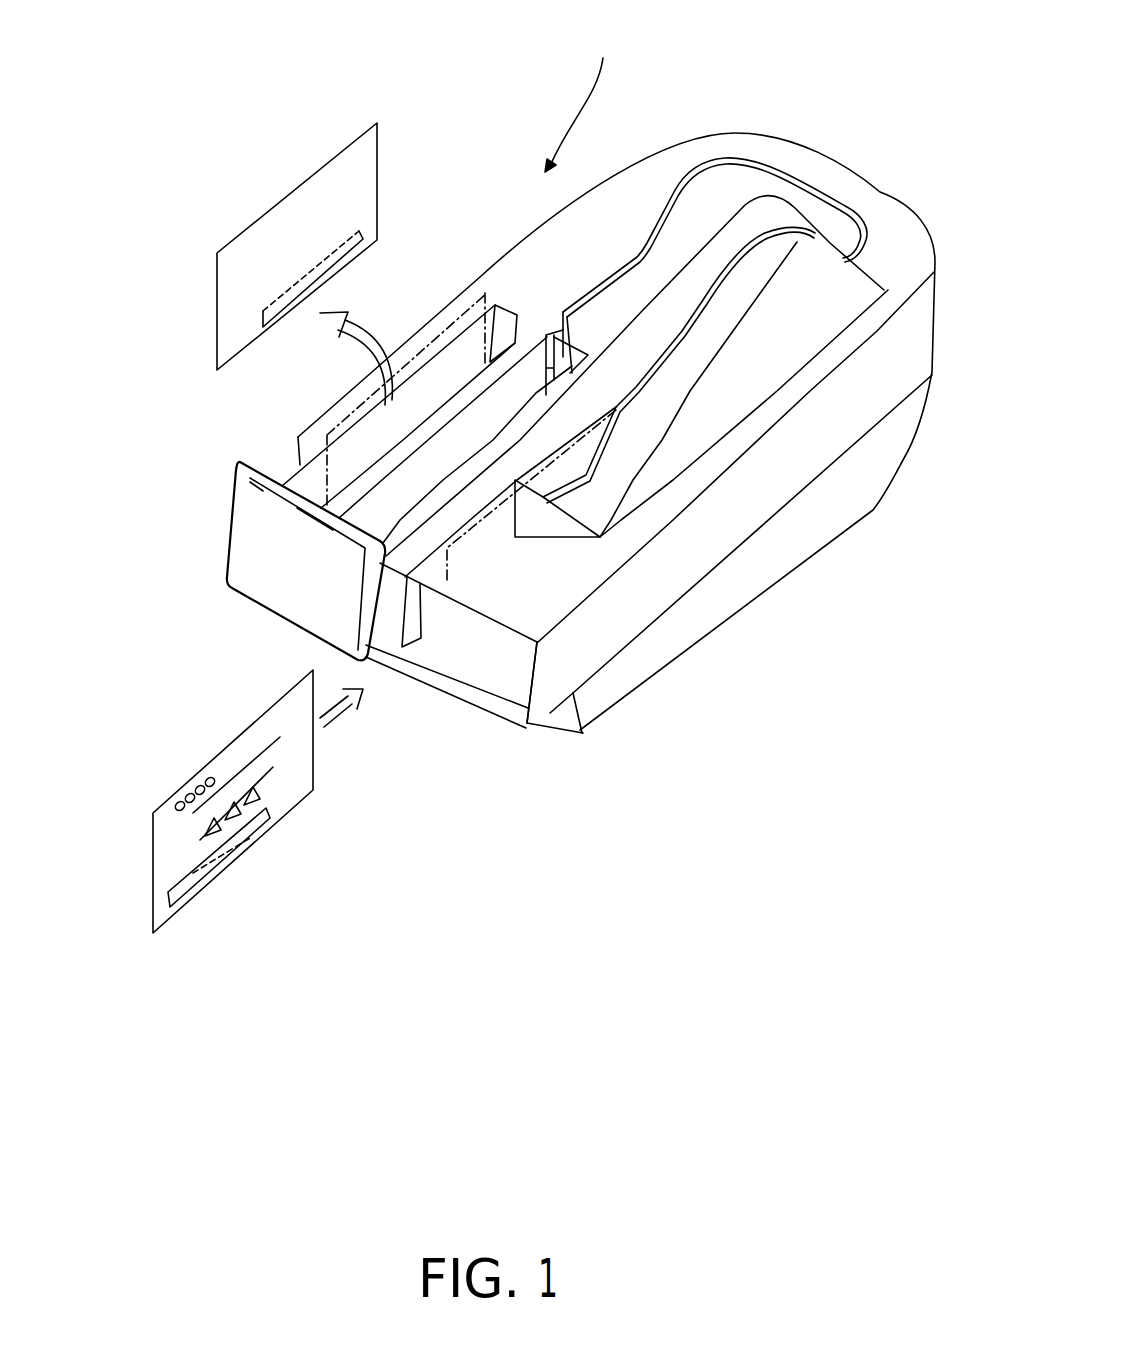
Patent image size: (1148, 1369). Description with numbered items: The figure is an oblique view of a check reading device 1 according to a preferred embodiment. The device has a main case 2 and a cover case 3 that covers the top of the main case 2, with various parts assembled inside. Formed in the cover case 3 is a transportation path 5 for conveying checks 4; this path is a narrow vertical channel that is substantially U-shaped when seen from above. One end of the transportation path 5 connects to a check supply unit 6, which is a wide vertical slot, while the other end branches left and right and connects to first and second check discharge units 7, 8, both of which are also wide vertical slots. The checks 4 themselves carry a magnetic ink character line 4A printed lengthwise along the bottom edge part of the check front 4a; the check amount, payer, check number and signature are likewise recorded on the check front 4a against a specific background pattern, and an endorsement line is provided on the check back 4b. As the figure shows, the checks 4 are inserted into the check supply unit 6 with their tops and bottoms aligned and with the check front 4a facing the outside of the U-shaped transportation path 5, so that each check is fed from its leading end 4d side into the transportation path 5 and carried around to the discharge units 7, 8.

The check reading device 1 is at (616, 52).
The main case 2 is at (681, 605).
The cover case 3 is at (563, 640).
The check 4 is at (262, 218).
The check front 4a is at (247, 283).
The magnetic ink character line 4A is at (293, 284).
The check back 4b is at (362, 192).
The leading end 4d is at (218, 315).
The transportation path 5 is at (793, 179).
The check supply unit 6 is at (462, 557).
The first check discharge unit 7 is at (378, 513).
The second check discharge unit 8 is at (305, 469).